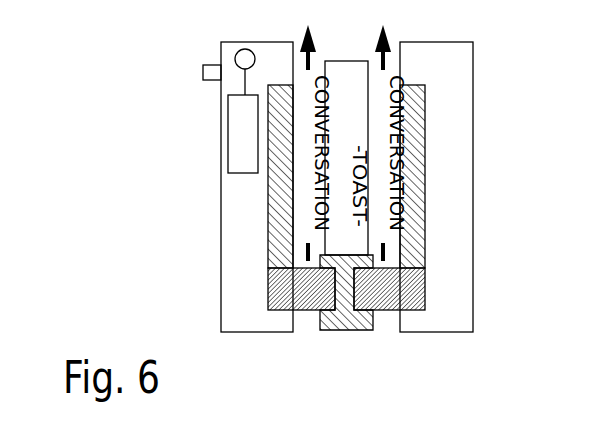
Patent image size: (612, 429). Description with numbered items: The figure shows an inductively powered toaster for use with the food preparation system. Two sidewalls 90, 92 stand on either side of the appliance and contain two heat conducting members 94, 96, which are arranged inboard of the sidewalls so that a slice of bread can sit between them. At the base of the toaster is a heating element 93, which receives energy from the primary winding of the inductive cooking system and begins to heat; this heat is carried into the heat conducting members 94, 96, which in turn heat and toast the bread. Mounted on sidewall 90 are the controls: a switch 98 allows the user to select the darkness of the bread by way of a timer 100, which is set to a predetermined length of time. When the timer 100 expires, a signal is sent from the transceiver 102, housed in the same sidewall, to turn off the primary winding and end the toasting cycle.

The sidewall 90 is at (221, 192).
The sidewall 92 is at (473, 178).
The heating element 93 is at (356, 332).
The heat conducting member 94 is at (268, 241).
The heat conducting member 96 is at (419, 85).
The switch 98 is at (203, 72).
The timer 100 is at (242, 50).
The transceiver 102 is at (228, 118).